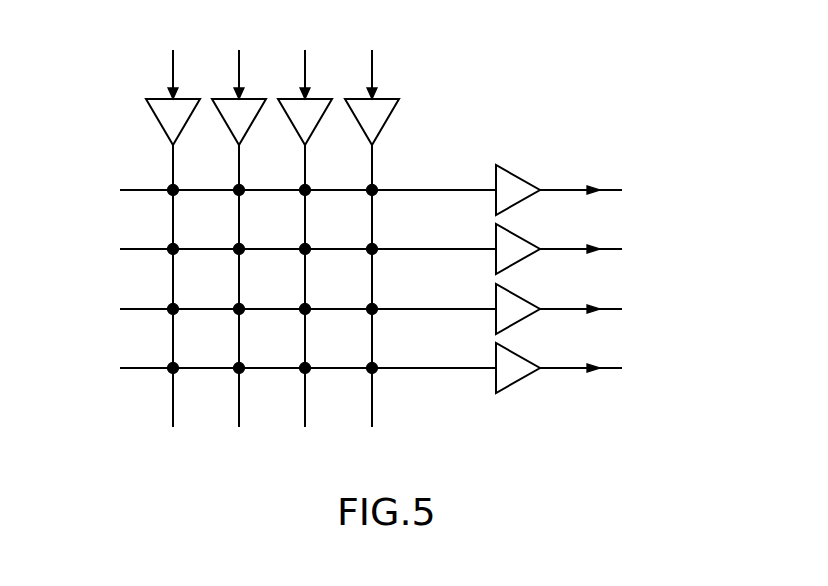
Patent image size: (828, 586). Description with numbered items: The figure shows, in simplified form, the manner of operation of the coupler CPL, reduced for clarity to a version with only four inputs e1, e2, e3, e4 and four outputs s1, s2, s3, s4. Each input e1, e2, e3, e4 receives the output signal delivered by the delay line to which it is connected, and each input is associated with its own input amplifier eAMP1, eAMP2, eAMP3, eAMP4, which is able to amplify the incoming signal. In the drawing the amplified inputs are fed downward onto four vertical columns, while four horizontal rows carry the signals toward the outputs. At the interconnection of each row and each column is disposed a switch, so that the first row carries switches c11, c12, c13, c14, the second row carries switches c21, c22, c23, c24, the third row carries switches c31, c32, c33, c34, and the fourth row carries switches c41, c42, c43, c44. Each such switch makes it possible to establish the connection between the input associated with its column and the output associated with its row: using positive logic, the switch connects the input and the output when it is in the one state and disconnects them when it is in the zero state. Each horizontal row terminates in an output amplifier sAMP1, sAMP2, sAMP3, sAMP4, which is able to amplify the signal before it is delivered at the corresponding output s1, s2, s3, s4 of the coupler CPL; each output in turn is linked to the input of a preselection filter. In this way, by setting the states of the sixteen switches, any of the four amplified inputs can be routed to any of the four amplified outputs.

The coupler CPL is at (612, 79).
The input e1 is at (174, 62).
The input e2 is at (240, 62).
The input e3 is at (306, 62).
The input e4 is at (373, 62).
The input amplifier eAMP1 is at (156, 117).
The input amplifier eAMP2 is at (226, 123).
The input amplifier eAMP3 is at (320, 120).
The input amplifier eAMP4 is at (387, 120).
The switch c11 is at (159, 200).
The switch c12 is at (225, 200).
The switch c13 is at (291, 200).
The switch c14 is at (358, 200).
The switch c21 is at (159, 259).
The switch c22 is at (225, 259).
The switch c23 is at (291, 259).
The switch c24 is at (358, 259).
The switch c31 is at (159, 319).
The switch c32 is at (225, 319).
The switch c33 is at (291, 319).
The switch c34 is at (358, 319).
The switch c41 is at (159, 378).
The switch c42 is at (225, 378).
The switch c43 is at (291, 378).
The switch c44 is at (358, 378).
The output amplifier sAMP1 is at (518, 204).
The output amplifier sAMP2 is at (518, 263).
The output amplifier sAMP3 is at (518, 323).
The output amplifier sAMP4 is at (518, 382).
The output s1 is at (594, 189).
The output s2 is at (594, 248).
The output s3 is at (594, 308).
The output s4 is at (594, 367).